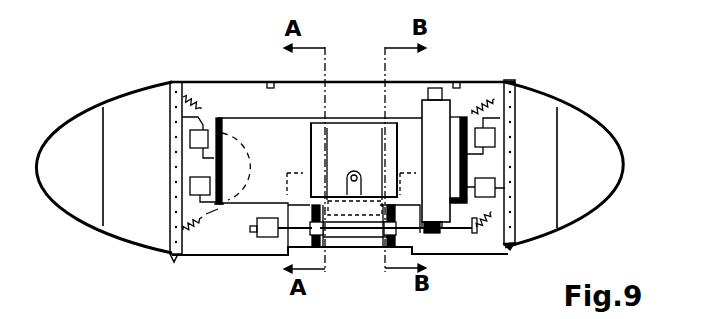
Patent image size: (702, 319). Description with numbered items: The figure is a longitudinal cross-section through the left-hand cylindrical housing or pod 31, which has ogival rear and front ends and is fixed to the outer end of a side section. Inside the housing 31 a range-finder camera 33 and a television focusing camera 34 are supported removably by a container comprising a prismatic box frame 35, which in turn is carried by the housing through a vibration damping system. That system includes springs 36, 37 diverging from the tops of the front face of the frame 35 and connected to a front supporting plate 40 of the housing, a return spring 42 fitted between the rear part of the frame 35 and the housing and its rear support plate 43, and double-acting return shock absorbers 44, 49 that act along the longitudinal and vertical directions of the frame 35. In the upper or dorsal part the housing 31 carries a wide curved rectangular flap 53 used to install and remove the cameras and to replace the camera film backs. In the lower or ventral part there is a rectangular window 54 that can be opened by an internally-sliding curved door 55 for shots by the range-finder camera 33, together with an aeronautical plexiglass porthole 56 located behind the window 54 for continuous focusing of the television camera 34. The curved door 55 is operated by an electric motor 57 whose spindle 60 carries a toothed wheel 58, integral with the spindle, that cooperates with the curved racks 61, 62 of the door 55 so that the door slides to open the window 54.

The cylindrical housing or pod 31 is at (48, 169).
The range-finder camera 33 is at (327, 147).
The television focusing camera 34 is at (430, 113).
The prismatic box frame 35 is at (222, 178).
The spring 36 is at (208, 222).
The spring 37 is at (203, 112).
The front supporting plate 40 is at (173, 107).
The return spring 42 is at (483, 97).
The rear support plate 43 is at (513, 118).
The double-acting return shock absorber 44 is at (190, 185).
The double-acting return shock absorber 49 is at (190, 136).
The curved rectangular flap 53 is at (305, 83).
The rectangular window 54 is at (367, 253).
The curved door 55 is at (337, 240).
The aeronautical plexiglass porthole 56 is at (442, 258).
The electric motor 57 is at (268, 231).
The toothed wheel 58 is at (318, 249).
The spindle 60 is at (418, 237).
The curved rack 61 is at (307, 212).
The curved rack 62 is at (398, 212).